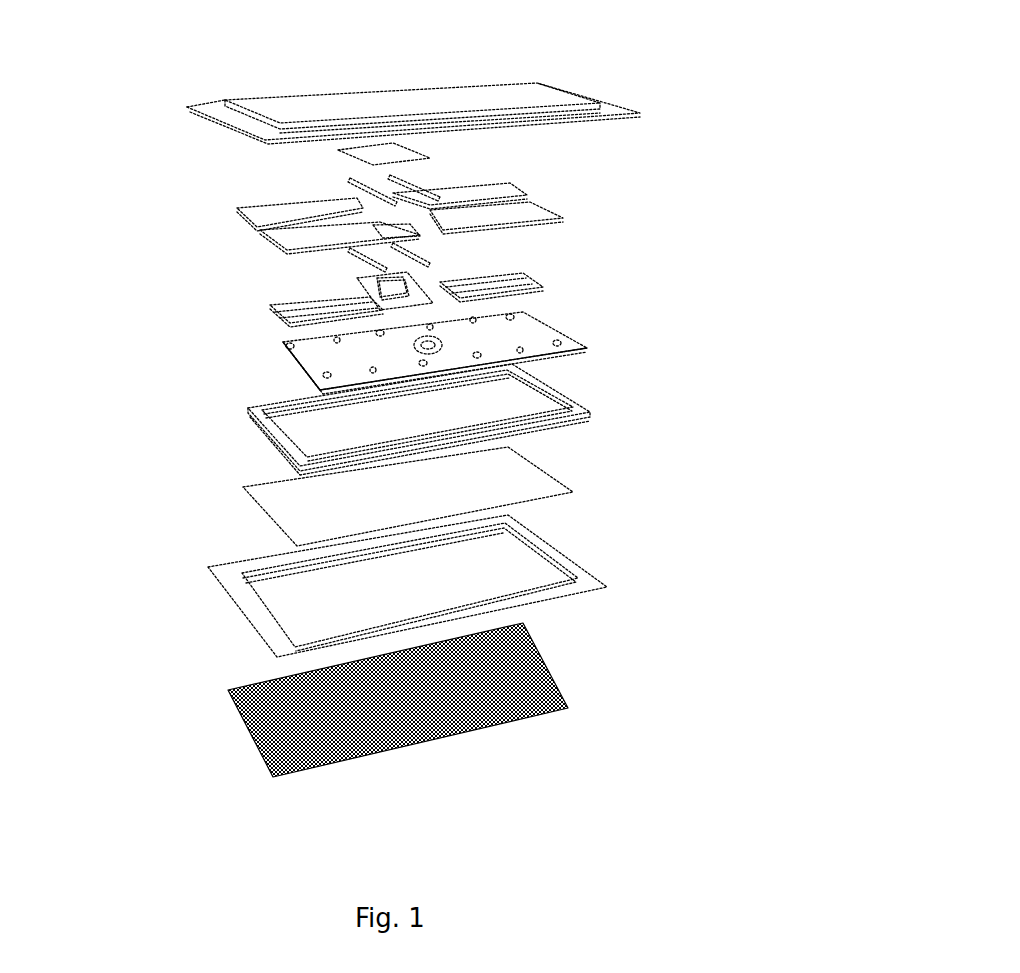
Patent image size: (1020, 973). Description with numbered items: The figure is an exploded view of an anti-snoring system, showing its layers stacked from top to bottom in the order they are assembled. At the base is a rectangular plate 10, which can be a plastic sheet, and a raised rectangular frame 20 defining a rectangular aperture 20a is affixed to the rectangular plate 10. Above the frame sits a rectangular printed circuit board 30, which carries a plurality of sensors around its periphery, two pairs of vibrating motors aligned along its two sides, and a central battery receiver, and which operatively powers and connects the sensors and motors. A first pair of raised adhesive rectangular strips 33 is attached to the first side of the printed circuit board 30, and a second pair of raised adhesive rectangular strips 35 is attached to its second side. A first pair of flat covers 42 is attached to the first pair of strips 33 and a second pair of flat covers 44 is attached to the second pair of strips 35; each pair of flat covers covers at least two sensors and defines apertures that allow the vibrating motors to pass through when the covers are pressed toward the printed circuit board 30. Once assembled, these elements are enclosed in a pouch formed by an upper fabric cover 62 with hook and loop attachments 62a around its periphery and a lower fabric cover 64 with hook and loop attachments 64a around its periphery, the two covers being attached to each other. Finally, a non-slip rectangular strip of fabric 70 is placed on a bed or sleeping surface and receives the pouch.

The upper fabric cover 62 is at (535, 86).
The hook and loop attachments 62a is at (237, 117).
The first pair of flat covers 42 is at (237, 210).
The second pair of flat covers 44 is at (560, 212).
The first pair of raised adhesive rectangular strips 33 is at (272, 308).
The second pair of raised adhesive rectangular strips 35 is at (540, 285).
The rectangular printed circuit board 30 is at (320, 363).
The raised rectangular frame 20 is at (567, 393).
The rectangular aperture 20a is at (280, 455).
The rectangular plate 10 is at (483, 475).
The lower fabric cover 64 is at (483, 568).
The hook and loop attachments 64a is at (235, 588).
The non-slip rectangular strip of fabric 70 is at (550, 672).